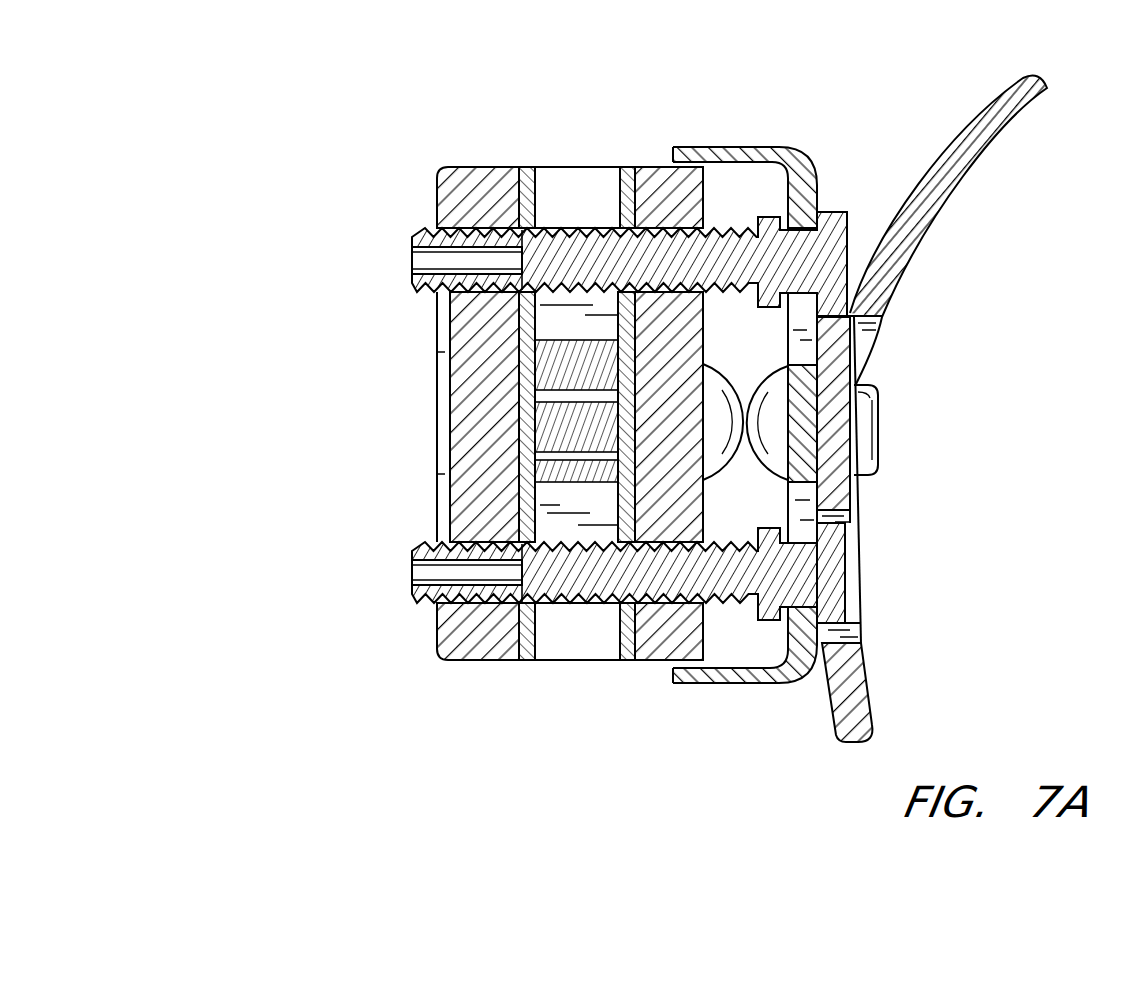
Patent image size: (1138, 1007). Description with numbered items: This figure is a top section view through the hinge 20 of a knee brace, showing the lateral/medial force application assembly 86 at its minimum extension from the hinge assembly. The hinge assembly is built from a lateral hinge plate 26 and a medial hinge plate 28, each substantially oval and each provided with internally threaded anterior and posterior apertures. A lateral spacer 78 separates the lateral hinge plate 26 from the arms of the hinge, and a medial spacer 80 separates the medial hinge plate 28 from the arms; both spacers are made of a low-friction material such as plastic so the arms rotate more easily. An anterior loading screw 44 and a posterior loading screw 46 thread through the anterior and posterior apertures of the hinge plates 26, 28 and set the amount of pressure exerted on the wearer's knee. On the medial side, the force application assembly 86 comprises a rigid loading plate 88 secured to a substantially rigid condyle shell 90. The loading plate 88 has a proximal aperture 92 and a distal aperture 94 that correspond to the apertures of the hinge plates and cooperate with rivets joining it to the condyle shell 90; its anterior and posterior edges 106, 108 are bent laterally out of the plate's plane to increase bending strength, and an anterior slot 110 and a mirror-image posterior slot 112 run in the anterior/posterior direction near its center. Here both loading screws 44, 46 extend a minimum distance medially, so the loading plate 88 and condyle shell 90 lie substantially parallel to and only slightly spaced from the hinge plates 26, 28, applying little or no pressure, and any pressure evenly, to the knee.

The hinge 20 is at (300, 100).
The lateral hinge plate 26 is at (470, 185).
The medial hinge plate 28 is at (658, 172).
The anterior loading screw 44 is at (743, 592).
The posterior loading screw 46 is at (789, 168).
The lateral spacer 78 is at (527, 660).
The medial spacer 80 is at (630, 660).
The lateral/medial force application assembly 86 is at (912, 88).
The loading plate 88 is at (813, 173).
The condyle shell 90 is at (1023, 83).
The proximal aperture 92 is at (812, 236).
The distal aperture 94 is at (807, 600).
The anterior edge 106 is at (757, 684).
The posterior edge 108 is at (741, 152).
The anterior slot 110 is at (798, 512).
The posterior slot 112 is at (795, 325).